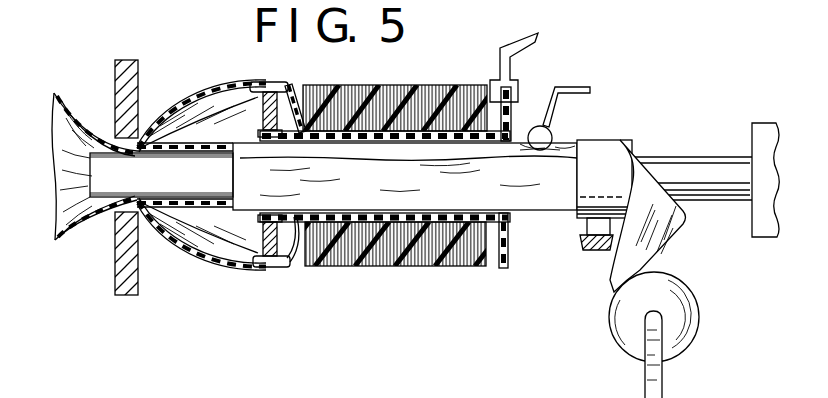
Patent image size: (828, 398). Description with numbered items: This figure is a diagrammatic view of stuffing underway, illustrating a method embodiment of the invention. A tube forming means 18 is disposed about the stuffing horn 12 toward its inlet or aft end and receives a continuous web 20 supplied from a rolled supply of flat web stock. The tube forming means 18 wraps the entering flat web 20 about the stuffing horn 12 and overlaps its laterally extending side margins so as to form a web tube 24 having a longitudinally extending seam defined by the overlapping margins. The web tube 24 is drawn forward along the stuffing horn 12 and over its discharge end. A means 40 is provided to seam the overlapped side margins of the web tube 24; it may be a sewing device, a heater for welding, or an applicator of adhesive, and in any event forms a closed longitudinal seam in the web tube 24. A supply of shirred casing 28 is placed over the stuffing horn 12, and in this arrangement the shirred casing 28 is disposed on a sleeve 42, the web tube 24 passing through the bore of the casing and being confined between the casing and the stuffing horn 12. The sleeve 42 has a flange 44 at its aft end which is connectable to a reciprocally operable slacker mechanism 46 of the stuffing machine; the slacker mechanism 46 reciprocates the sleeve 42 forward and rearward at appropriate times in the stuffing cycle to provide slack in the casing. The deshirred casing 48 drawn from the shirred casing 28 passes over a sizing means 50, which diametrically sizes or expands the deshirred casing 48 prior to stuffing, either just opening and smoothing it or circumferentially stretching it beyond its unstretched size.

The stuffing horn 12 is at (185, 192).
The tube forming means 18 is at (600, 158).
The continuous web 20 is at (672, 227).
The web tube 24 is at (242, 172).
The shirred casing 28 is at (398, 85).
The seaming means 40 is at (565, 88).
The sleeve 42 is at (430, 220).
The flange 44 is at (507, 267).
The slacker mechanism 46 is at (500, 48).
The deshirred casing 48 is at (263, 82).
The sizing means 50 is at (257, 112).